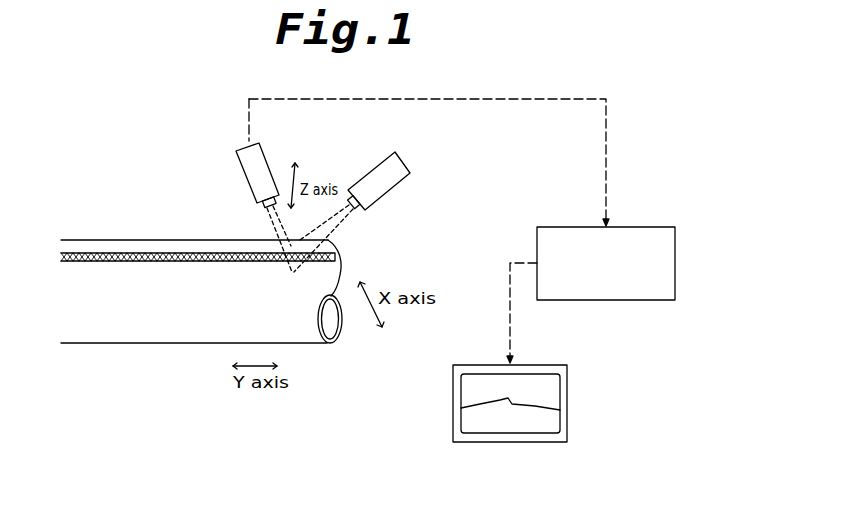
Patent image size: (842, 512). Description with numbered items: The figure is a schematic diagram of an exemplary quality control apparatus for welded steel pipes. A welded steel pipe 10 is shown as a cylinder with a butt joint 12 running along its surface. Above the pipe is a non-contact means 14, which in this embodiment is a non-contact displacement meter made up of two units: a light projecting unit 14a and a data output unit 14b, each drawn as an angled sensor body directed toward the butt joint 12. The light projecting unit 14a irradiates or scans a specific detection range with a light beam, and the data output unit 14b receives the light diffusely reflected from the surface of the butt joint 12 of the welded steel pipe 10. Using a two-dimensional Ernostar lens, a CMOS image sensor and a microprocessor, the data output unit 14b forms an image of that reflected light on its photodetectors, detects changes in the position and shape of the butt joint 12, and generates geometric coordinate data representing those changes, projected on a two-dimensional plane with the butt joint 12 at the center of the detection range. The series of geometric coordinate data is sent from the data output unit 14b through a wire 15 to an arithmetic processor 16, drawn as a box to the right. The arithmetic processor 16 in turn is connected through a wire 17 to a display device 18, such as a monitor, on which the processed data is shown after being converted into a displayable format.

The welded steel pipe 10 is at (171, 317).
The butt joint 12 is at (194, 240).
The non-contact means 14 is at (322, 184).
The light projecting unit 14a is at (402, 163).
The data output unit 14b is at (240, 146).
The wire 15 is at (520, 99).
The arithmetic processor 16 is at (646, 284).
The wire 17 is at (510, 323).
The display device 18 is at (567, 400).